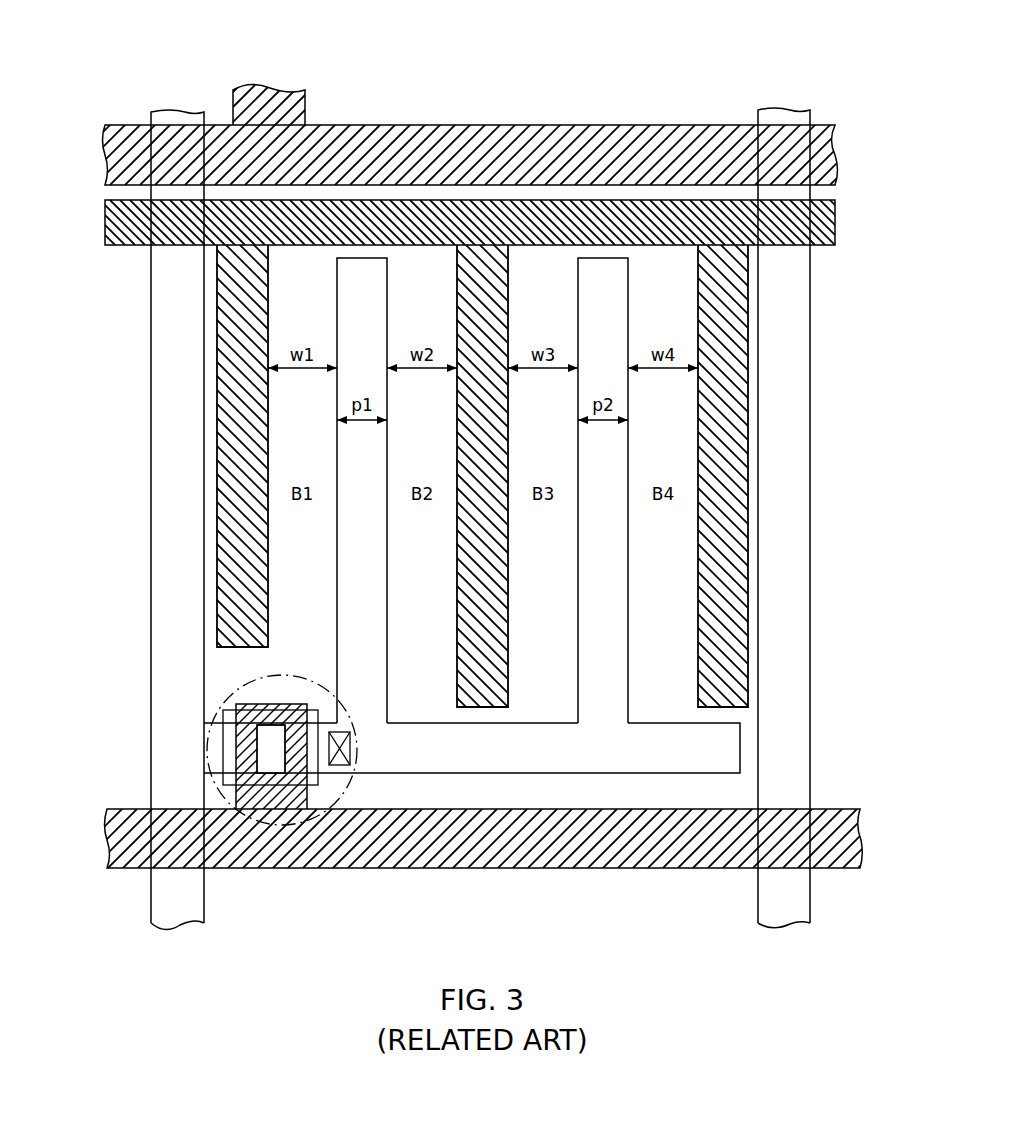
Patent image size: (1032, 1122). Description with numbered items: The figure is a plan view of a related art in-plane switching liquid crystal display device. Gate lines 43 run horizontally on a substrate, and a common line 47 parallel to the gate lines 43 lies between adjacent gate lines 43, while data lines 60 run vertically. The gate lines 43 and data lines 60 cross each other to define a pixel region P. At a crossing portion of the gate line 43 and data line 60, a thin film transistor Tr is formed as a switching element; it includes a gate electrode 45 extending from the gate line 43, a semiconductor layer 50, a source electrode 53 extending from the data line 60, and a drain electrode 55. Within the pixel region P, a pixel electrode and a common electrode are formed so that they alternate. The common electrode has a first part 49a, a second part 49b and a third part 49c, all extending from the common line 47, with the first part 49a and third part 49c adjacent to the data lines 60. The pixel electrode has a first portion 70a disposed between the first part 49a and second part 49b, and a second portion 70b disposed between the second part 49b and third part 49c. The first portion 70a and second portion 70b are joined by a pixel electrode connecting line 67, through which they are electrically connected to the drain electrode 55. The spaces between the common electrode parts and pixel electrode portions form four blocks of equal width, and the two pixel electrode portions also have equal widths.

The gate line 43 is at (653, 857).
The gate electrode 45 is at (245, 810).
The common line 47 is at (820, 230).
The first part of the common electrode 49a is at (230, 313).
The second part of the common electrode 49b is at (487, 707).
The third part of the common electrode 49c is at (733, 643).
The semiconductor layer 50 is at (320, 805).
The source electrode 53 is at (217, 752).
The drain electrode 55 is at (330, 700).
The data line 60 is at (163, 382).
The pixel electrode connecting line 67 is at (725, 750).
The first portion of the pixel electrode 70a is at (365, 270).
The second portion of the pixel electrode 70b is at (600, 275).
The pixel region P is at (657, 272).
The thin film transistor Tr is at (287, 822).